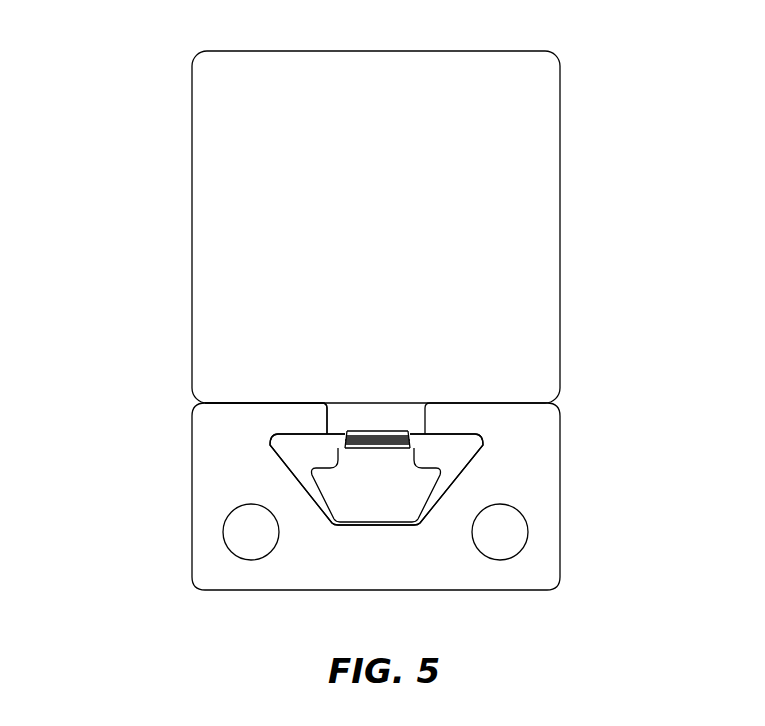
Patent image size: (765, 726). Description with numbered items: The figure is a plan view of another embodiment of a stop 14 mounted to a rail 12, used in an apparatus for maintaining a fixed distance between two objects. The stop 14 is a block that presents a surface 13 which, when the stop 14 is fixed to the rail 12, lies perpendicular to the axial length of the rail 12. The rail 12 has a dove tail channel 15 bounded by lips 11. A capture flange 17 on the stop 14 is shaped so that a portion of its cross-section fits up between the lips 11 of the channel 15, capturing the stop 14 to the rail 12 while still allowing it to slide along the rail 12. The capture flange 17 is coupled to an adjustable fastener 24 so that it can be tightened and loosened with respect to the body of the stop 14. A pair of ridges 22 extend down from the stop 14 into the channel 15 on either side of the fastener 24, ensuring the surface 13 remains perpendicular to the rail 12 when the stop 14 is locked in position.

The stop 14 is at (128, 114).
The surface 13 is at (561, 228).
The rail 12 is at (561, 502).
The lips 11 is at (308, 418).
The channel 15 is at (272, 462).
The capture flange 17 is at (392, 493).
The ridges 22 is at (362, 418).
The fastener 24 is at (413, 446).